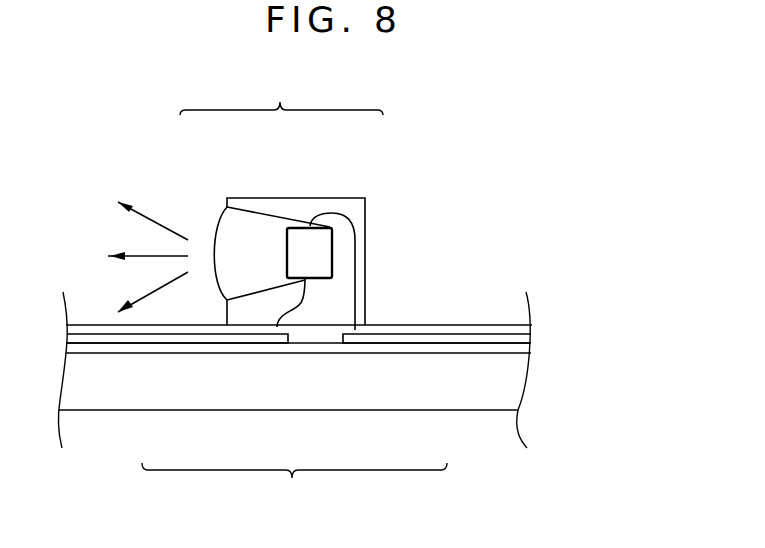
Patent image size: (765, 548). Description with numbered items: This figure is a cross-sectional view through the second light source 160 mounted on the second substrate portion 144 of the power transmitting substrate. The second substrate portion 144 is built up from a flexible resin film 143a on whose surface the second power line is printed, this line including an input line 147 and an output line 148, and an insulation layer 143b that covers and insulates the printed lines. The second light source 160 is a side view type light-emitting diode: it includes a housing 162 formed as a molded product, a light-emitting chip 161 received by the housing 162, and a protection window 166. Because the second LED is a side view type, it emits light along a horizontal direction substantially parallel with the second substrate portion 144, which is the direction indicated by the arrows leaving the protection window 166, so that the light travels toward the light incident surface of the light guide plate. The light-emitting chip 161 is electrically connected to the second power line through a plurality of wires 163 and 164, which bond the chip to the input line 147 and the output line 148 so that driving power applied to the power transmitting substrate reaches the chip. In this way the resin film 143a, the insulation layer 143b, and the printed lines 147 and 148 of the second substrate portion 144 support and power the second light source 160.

The second light source 160 is at (281, 96).
The light-emitting chip 161 is at (297, 237).
The housing 162 is at (283, 205).
The wire 163 is at (305, 298).
The wire 164 is at (310, 226).
The protection window 166 is at (223, 222).
The second substrate portion 144 is at (295, 398).
The flexible resin film 143a is at (312, 382).
The insulation layer 143b is at (232, 350).
The input line 147 is at (157, 340).
The output line 148 is at (428, 340).